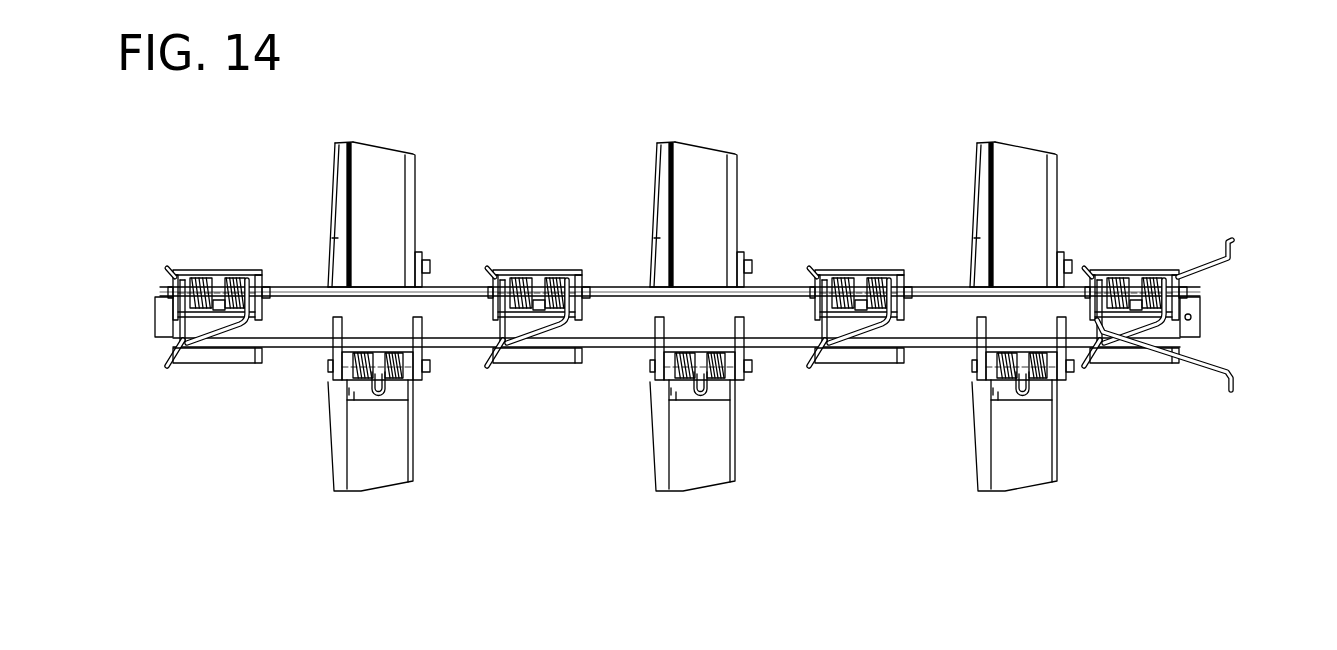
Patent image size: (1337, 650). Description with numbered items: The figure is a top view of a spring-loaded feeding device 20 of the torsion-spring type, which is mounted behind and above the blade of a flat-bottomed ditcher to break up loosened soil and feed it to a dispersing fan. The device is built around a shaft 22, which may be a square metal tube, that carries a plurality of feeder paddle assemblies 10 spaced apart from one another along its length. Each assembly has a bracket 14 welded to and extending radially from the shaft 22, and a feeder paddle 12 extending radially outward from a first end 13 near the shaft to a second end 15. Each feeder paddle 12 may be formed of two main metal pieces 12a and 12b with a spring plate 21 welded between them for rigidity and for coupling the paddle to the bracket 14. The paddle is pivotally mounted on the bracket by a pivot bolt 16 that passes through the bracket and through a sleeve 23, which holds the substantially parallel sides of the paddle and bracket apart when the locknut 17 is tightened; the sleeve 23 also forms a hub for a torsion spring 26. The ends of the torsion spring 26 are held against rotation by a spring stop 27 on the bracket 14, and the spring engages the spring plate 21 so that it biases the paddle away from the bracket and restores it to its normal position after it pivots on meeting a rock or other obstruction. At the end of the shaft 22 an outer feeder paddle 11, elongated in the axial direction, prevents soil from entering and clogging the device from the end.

The feeder paddle assembly 10 is at (863, 213).
The outer feeder paddle 11 is at (1235, 255).
The feeder paddle 12 is at (1015, 160).
The main metal piece 12a is at (655, 147).
The main metal piece 12b is at (697, 145).
The first end 13 is at (315, 275).
The bracket 14 is at (1070, 378).
The second end 15 is at (330, 158).
The pivot bolt 16 is at (328, 365).
The locknut 17 is at (430, 377).
The spring-loaded feeding device 20 is at (955, 75).
The spring plate 21 is at (393, 393).
The shaft 22 is at (445, 302).
The sleeve 23 is at (1160, 282).
The torsion spring 26 is at (553, 280).
The spring stop 27 is at (1130, 270).